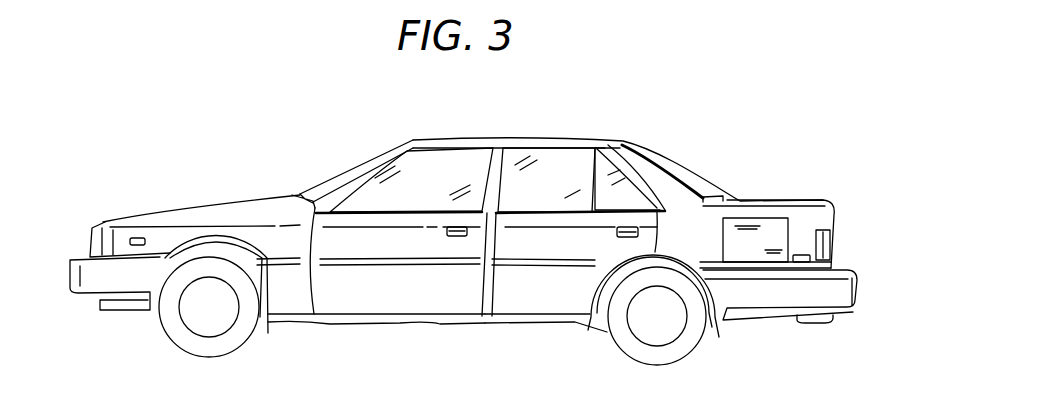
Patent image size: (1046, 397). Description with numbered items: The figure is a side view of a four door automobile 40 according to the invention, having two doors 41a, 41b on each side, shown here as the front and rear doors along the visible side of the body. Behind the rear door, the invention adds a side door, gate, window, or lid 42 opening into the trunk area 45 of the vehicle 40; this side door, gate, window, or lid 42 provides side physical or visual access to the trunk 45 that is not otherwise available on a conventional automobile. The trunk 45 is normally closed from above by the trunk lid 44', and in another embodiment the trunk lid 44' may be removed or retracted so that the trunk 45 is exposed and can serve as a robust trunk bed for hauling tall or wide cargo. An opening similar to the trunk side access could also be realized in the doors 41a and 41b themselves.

The four door automobile 40 is at (322, 151).
The door 41a is at (453, 302).
The door 41b is at (567, 312).
The side door, gate, window, or lid 42 is at (778, 233).
The trunk lid 44' is at (775, 158).
The trunk area 45 is at (797, 243).